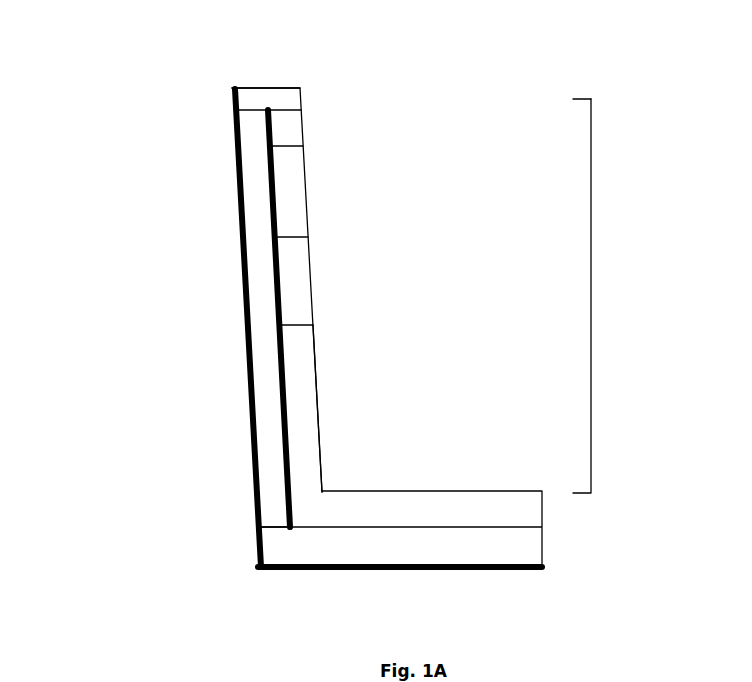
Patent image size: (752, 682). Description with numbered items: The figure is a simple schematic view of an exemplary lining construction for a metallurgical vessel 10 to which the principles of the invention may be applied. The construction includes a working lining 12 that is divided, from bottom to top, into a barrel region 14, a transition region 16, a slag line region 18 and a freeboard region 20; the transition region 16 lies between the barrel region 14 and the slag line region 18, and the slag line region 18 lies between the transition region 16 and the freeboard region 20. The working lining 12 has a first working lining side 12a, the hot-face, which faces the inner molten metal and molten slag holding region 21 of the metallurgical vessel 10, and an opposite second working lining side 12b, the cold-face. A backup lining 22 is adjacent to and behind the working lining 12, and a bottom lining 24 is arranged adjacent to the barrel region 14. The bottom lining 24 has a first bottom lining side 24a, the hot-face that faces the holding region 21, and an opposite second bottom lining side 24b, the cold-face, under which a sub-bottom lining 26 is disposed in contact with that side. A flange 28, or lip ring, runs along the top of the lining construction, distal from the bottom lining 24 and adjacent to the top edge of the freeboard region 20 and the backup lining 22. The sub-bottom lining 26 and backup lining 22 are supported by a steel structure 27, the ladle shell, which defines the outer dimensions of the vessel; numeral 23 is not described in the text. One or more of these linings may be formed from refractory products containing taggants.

The metallurgical vessel 10 is at (186, 50).
The working lining 12 is at (591, 287).
The first working lining side 12a is at (342, 338).
The second working lining side 12b is at (256, 188).
The barrel region 14 is at (315, 430).
The transition region 16 is at (307, 257).
The slag line region 18 is at (301, 166).
The freeboard region 20 is at (299, 128).
The inner molten metal and molten slag holding region 21 is at (533, 98).
The backup lining 22 is at (265, 228).
The inner lining layer 23 is at (275, 305).
The bottom lining 24 is at (410, 507).
The first bottom lining side 24a is at (500, 480).
The second bottom lining side 24b is at (532, 547).
The sub-bottom lining 26 is at (295, 556).
The steel structure 27 is at (247, 380).
The flange 28 is at (262, 92).